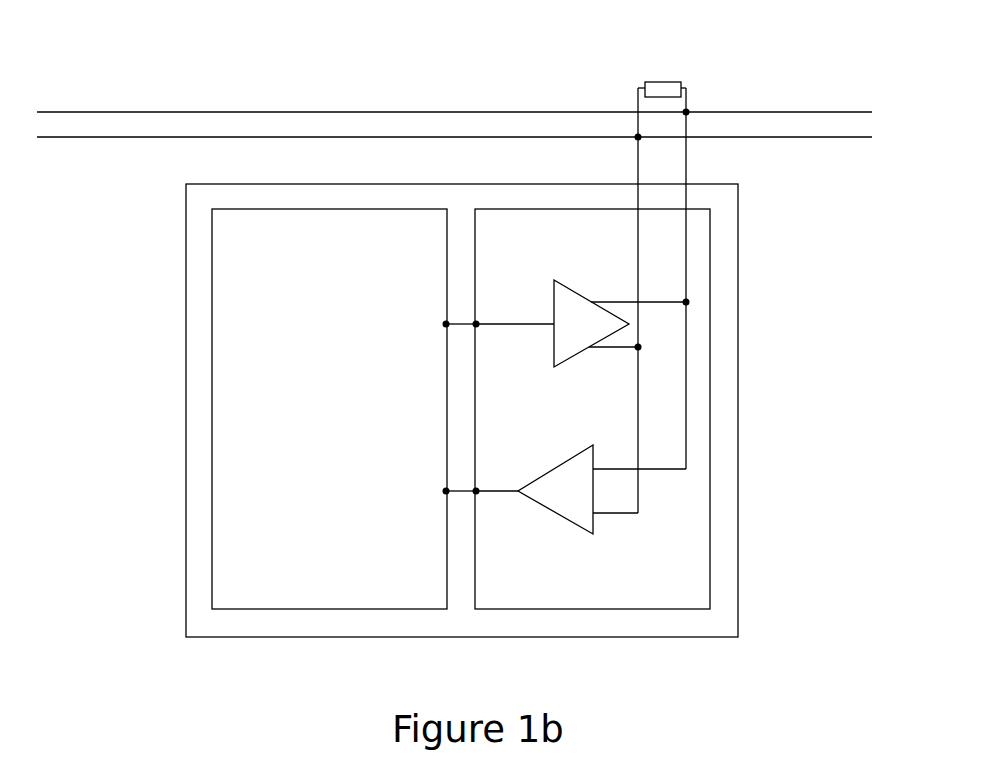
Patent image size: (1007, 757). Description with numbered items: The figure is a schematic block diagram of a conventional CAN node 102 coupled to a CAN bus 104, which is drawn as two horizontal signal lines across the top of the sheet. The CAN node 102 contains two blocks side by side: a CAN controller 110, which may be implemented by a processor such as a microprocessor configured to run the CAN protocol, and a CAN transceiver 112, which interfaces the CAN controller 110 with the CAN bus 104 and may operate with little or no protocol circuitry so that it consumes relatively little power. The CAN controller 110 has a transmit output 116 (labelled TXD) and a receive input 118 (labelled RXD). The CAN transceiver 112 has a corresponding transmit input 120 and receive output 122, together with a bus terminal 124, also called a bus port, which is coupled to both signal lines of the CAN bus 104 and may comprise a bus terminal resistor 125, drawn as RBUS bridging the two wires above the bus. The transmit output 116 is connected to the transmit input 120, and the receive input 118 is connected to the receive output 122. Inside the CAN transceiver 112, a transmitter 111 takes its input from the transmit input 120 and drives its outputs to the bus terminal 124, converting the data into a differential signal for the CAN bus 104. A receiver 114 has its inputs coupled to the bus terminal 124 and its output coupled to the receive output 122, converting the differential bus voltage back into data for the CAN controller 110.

The CAN node 102 is at (186, 303).
The CAN bus 104 is at (203, 102).
The CAN controller 110 is at (340, 426).
The transmitter 111 is at (588, 297).
The CAN transceiver 112 is at (657, 611).
The receiver 114 is at (596, 528).
The transmit output 116 is at (444, 320).
The receive input 118 is at (441, 496).
The transmit input 120 is at (478, 320).
The receive output 122 is at (478, 497).
The bus terminal 124 is at (693, 127).
The bus terminal resistor 125 is at (680, 53).